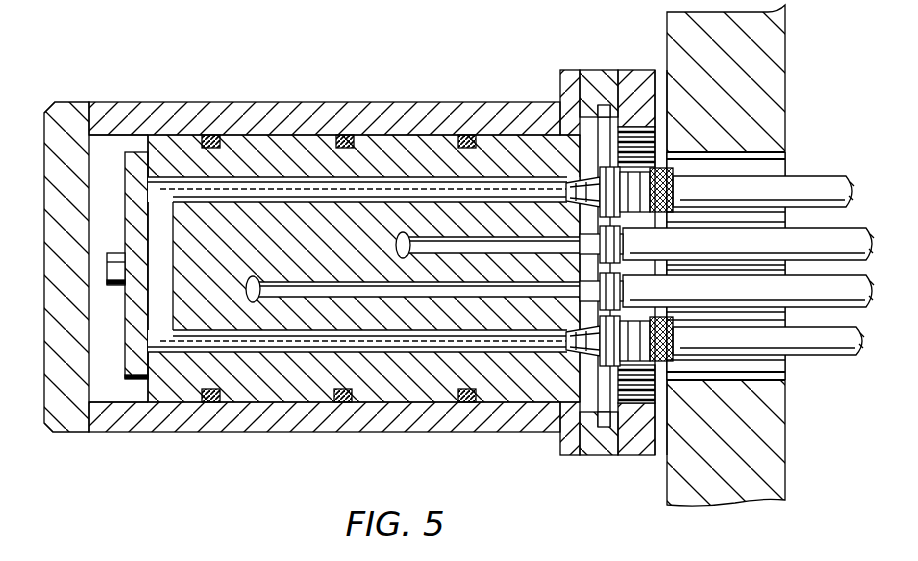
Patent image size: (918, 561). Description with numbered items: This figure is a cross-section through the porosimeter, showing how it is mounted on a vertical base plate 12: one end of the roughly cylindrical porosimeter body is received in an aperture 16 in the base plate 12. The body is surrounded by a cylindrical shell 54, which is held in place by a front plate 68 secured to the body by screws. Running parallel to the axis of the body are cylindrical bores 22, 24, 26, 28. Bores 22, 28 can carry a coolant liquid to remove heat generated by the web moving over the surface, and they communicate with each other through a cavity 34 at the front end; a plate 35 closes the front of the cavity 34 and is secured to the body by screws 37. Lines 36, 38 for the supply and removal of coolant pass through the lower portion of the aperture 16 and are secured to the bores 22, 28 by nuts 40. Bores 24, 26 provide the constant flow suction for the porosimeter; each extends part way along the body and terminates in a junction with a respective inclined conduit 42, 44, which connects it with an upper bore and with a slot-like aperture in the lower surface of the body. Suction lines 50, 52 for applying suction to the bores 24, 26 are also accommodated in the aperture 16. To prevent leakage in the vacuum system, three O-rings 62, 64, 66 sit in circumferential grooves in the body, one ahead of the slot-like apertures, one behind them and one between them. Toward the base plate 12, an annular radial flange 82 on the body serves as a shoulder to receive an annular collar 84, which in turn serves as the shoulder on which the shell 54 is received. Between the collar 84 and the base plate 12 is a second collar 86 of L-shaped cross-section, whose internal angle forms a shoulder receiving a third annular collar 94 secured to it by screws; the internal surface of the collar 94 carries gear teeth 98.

The base plate 12 is at (763, 82).
The aperture 16 is at (785, 157).
The cylindrical bore 22 is at (492, 343).
The cylindrical bore 24 is at (303, 292).
The cylindrical bore 26 is at (508, 244).
The cylindrical bore 28 is at (440, 186).
The cavity 34 is at (163, 337).
The plate 35 is at (133, 378).
The line 36 is at (822, 297).
The screw 37 is at (109, 253).
The line 38 is at (806, 178).
The nut 40 is at (642, 216).
The inclined conduit 42 is at (252, 303).
The inclined conduit 44 is at (400, 233).
The suction line 50 is at (801, 343).
The suction line 52 is at (767, 250).
The cylindrical shell 54 is at (167, 120).
The O-ring 62 is at (212, 134).
The O-ring 64 is at (345, 135).
The O-ring 66 is at (468, 135).
The front plate 68 is at (53, 418).
The annular radial flange 82 is at (588, 450).
The annular collar 84 is at (565, 450).
The second collar 86 is at (598, 450).
The annular collar 94 is at (640, 440).
The gear teeth 98 is at (638, 128).